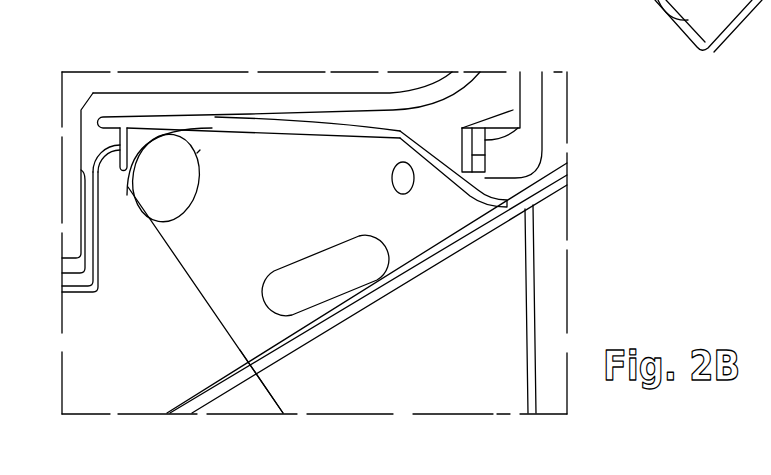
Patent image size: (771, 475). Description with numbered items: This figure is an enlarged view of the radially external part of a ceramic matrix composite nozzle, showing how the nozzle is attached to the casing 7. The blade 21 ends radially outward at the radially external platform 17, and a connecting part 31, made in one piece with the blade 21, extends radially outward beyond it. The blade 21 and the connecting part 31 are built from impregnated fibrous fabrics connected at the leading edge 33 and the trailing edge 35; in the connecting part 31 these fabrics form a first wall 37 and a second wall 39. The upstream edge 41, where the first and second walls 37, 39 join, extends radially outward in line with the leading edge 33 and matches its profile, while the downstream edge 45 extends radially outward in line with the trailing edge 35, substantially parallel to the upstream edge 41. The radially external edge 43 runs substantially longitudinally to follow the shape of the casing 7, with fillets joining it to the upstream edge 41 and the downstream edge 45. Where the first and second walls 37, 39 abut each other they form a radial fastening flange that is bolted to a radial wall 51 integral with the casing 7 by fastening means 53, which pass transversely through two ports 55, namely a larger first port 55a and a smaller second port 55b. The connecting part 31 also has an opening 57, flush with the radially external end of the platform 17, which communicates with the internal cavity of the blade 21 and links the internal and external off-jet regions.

The casing 7 is at (110, 103).
The radially external platform 17 is at (547, 180).
The blade 21 is at (432, 350).
The connecting part 31 is at (193, 296).
The leading edge 33 is at (266, 397).
The trailing edge 35 is at (537, 390).
The first wall 37 is at (362, 111).
The second wall 39 is at (323, 195).
The upstream edge 41 is at (130, 207).
The radially external edge 43 is at (280, 133).
The downstream edge 45 is at (522, 131).
The radial wall 51 is at (130, 130).
The fastening means 53 is at (167, 170).
The ports 55 is at (352, 104).
The first port 55a is at (197, 153).
The second port 55b is at (403, 162).
The opening 57 is at (300, 293).